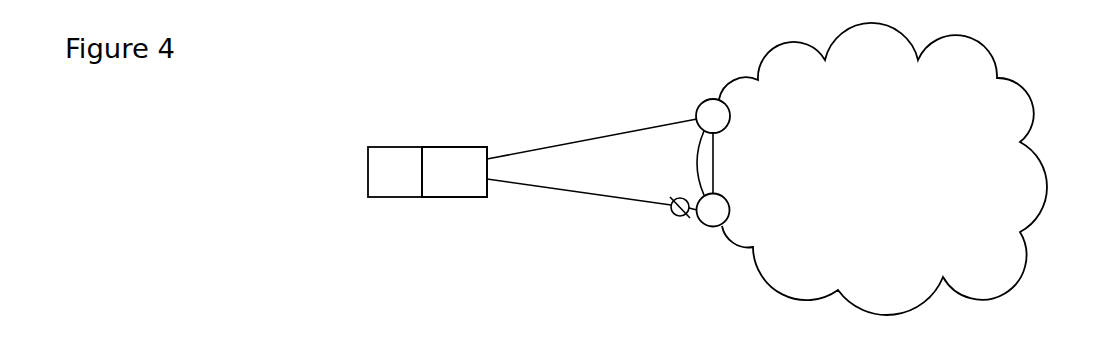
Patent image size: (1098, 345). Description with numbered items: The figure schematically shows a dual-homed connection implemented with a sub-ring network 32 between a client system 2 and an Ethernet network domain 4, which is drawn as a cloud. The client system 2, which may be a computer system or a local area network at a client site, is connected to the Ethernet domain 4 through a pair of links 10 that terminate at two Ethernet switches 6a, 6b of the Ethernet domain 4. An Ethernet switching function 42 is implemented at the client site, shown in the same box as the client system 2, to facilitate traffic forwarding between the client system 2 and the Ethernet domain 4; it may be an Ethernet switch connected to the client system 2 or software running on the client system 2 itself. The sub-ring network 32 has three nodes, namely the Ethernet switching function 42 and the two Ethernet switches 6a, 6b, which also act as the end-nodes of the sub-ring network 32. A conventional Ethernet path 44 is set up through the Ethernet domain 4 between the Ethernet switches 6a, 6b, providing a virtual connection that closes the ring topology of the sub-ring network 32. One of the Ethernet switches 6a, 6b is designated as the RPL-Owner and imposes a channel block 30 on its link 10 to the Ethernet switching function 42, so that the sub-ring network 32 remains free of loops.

The client system 2 is at (420, 170).
The Ethernet switching function 42 is at (453, 197).
The sub-ring network 32 is at (478, 82).
The links 10 is at (542, 148).
The Ethernet network domain 4 is at (928, 145).
The Ethernet switch 6a is at (729, 112).
The Ethernet switch 6b is at (729, 214).
The Ethernet path 44 is at (717, 165).
The channel block 30 is at (672, 216).